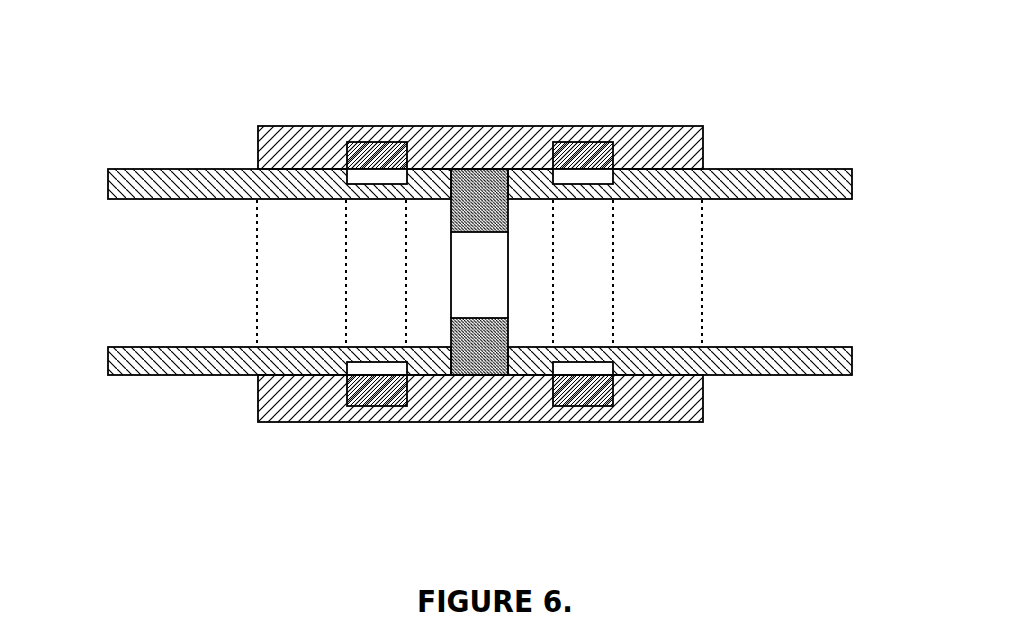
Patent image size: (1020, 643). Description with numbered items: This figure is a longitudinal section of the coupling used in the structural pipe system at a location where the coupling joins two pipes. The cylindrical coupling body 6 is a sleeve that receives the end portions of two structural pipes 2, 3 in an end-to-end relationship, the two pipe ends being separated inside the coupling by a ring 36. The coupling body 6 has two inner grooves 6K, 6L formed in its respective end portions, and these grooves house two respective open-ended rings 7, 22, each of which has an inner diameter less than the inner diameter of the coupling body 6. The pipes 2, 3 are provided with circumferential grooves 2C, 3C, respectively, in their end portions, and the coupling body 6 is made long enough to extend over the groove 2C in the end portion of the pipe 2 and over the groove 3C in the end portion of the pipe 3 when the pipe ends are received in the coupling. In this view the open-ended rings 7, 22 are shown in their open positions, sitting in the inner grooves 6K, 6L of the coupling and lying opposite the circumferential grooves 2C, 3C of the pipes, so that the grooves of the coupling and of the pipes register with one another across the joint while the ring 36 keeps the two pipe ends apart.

The pipe 2 is at (138, 360).
The pipe 3 is at (812, 183).
The cylindrical coupling body 6 is at (437, 126).
The open-ended ring 7 is at (377, 155).
The inner groove 6K is at (400, 147).
The inner groove 6L is at (565, 407).
The circumferential groove 2C is at (368, 364).
The circumferential groove 3C is at (575, 178).
The open-ended ring 22 is at (582, 393).
The ring 36 is at (464, 216).